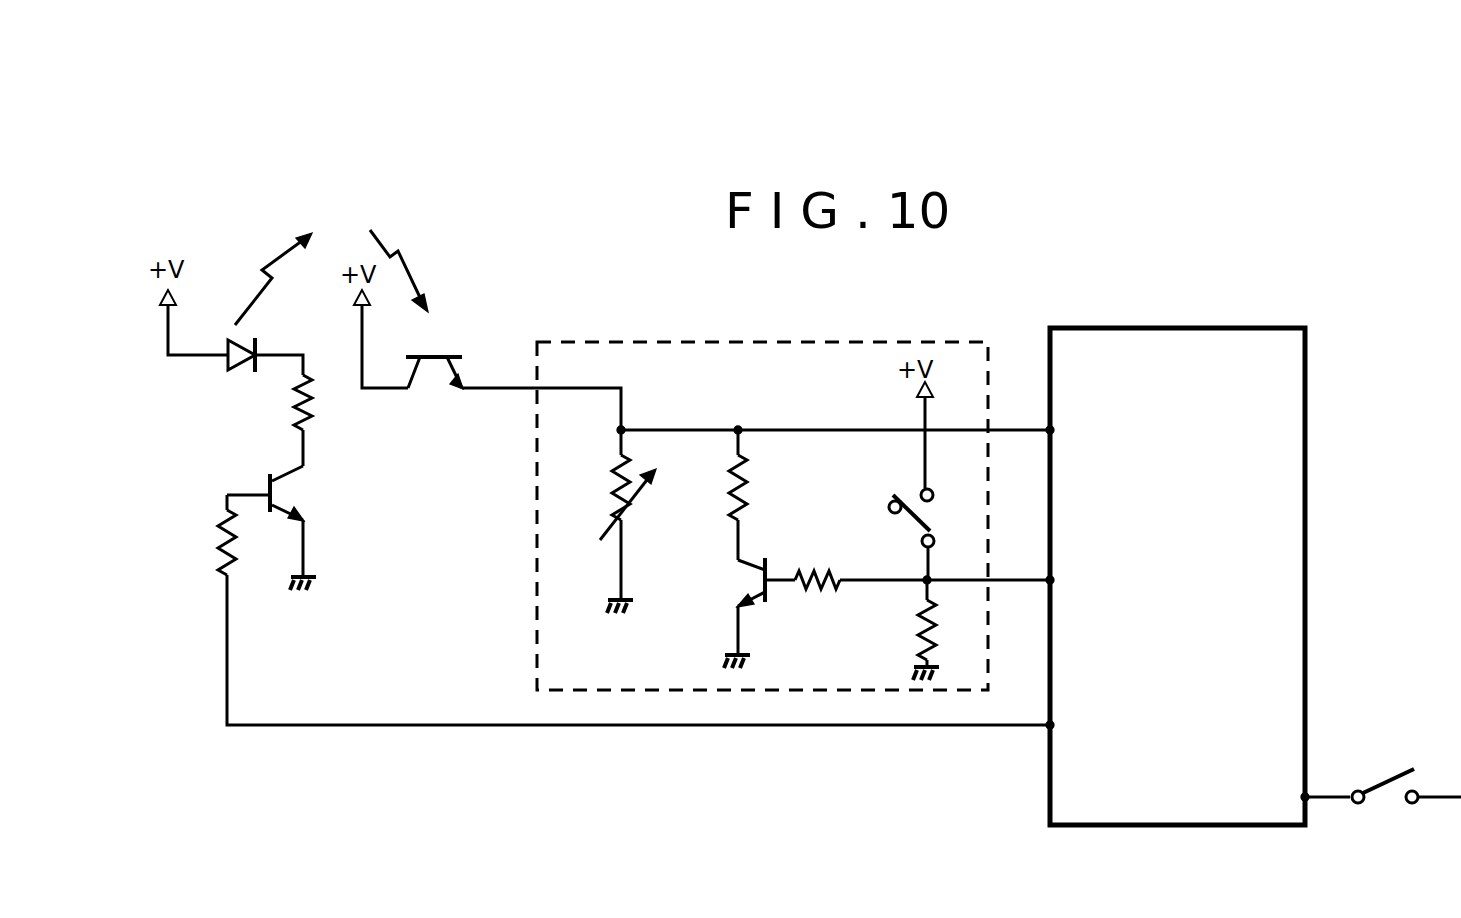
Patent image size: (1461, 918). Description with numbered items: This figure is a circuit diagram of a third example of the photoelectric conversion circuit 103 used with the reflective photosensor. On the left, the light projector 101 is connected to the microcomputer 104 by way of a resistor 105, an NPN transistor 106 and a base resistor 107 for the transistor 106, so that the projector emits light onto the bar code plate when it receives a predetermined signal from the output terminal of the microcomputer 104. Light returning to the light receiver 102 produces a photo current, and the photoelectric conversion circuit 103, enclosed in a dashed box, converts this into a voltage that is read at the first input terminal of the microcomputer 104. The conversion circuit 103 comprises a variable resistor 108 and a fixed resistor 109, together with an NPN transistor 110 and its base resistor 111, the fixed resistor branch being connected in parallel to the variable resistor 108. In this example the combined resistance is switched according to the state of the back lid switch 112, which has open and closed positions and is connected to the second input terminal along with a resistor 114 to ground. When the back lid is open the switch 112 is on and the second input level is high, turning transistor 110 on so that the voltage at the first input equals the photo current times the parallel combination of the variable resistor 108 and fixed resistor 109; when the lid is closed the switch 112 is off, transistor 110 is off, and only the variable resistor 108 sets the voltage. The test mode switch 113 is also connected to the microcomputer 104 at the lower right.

The light projector 101 is at (232, 375).
The light receiver 102 is at (448, 352).
The photoelectric conversion circuit 103 is at (858, 342).
The microcomputer 104 is at (1203, 332).
The resistor 105 is at (315, 415).
The NPN transistor 106 is at (300, 500).
The base resistor 107 is at (220, 530).
The variable resistor 108 is at (640, 500).
The fixed resistor 109 is at (750, 488).
The NPN transistor 110 is at (735, 585).
The base resistor 111 is at (810, 595).
The back lid switch 112 is at (902, 492).
The test mode switch 113 is at (1388, 805).
The resistor 114 is at (915, 620).